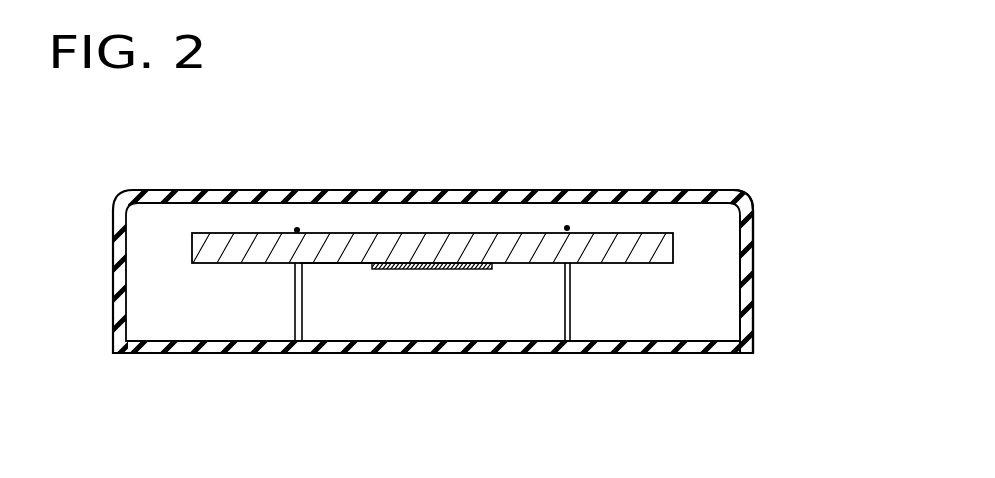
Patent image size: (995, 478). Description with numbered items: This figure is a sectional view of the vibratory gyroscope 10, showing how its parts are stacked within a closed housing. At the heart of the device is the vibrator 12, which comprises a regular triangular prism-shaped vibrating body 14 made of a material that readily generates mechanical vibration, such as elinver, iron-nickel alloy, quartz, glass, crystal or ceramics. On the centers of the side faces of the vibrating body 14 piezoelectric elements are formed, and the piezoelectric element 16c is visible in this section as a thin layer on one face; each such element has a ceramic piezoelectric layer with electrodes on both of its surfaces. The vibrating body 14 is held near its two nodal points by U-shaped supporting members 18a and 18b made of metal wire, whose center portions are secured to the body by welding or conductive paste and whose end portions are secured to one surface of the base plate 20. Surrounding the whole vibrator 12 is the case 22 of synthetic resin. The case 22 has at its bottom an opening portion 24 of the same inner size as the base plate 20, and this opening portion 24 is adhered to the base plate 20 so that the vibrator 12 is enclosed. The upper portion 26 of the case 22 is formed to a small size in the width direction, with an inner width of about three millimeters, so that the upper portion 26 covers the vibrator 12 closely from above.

The vibratory gyroscope 10 is at (360, 150).
The vibrator 12 is at (233, 270).
The vibrating body 14 is at (340, 264).
The piezoelectric element 16c is at (449, 270).
The supporting member 18a is at (294, 318).
The supporting member 18b is at (572, 315).
The base plate 20 is at (450, 354).
The case 22 is at (756, 257).
The opening portion 24 is at (740, 355).
The upper portion 26 is at (752, 205).